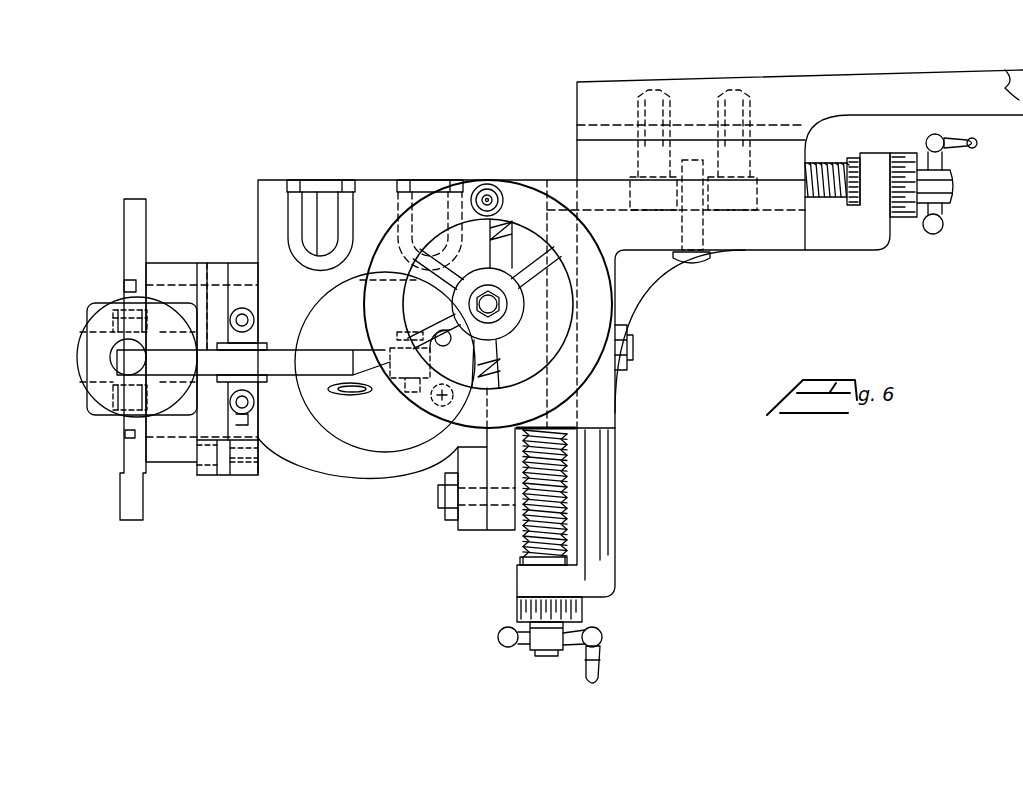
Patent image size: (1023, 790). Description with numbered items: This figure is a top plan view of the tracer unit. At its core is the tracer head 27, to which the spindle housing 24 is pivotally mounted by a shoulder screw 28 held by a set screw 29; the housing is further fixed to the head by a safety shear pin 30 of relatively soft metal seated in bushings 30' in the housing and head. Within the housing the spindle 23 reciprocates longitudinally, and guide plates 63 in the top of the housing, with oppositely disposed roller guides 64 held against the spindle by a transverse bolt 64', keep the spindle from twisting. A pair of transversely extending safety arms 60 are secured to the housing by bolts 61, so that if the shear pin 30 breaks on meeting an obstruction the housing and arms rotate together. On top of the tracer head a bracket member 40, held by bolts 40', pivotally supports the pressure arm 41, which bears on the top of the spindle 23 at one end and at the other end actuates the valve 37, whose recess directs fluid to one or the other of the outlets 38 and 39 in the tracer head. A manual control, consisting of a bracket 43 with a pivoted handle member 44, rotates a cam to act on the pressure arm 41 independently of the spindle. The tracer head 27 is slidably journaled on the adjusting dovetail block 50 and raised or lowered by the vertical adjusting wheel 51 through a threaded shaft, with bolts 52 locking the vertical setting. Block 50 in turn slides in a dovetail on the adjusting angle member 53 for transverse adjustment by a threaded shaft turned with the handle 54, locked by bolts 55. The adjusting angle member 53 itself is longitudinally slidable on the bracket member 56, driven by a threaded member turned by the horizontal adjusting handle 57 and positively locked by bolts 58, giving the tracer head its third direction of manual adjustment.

The spindle 23 is at (100, 362).
The spindle housing 24 is at (80, 350).
The tracer head 27 is at (377, 466).
The shoulder screw 28 is at (207, 273).
The set screw 29 is at (258, 408).
The safety shear pin 30 is at (227, 478).
The bushings 30' is at (266, 457).
The valve 37 is at (340, 428).
The outlet 38 is at (323, 177).
The outlet 39 is at (407, 187).
The bracket member 40 is at (254, 326).
The bolts 40' is at (264, 303).
The pressure arm 41 is at (313, 357).
The bracket 43 is at (437, 402).
The handle member 44 is at (335, 397).
The adjusting dovetail block 50 is at (497, 523).
The vertical adjusting wheel 51 is at (512, 192).
The bolts 52 is at (437, 503).
The adjusting angle member 53 is at (668, 290).
The handle 54 is at (557, 650).
The bolts 55 is at (643, 343).
The bracket member 56 is at (913, 80).
The horizontal adjusting handle 57 is at (965, 188).
The bolts 58 is at (720, 262).
The safety arms 60 is at (128, 500).
The bolts 61 is at (125, 434).
The guide plates 63 is at (113, 318).
The roller guides 64 is at (94, 303).
The bolt 64' is at (89, 403).